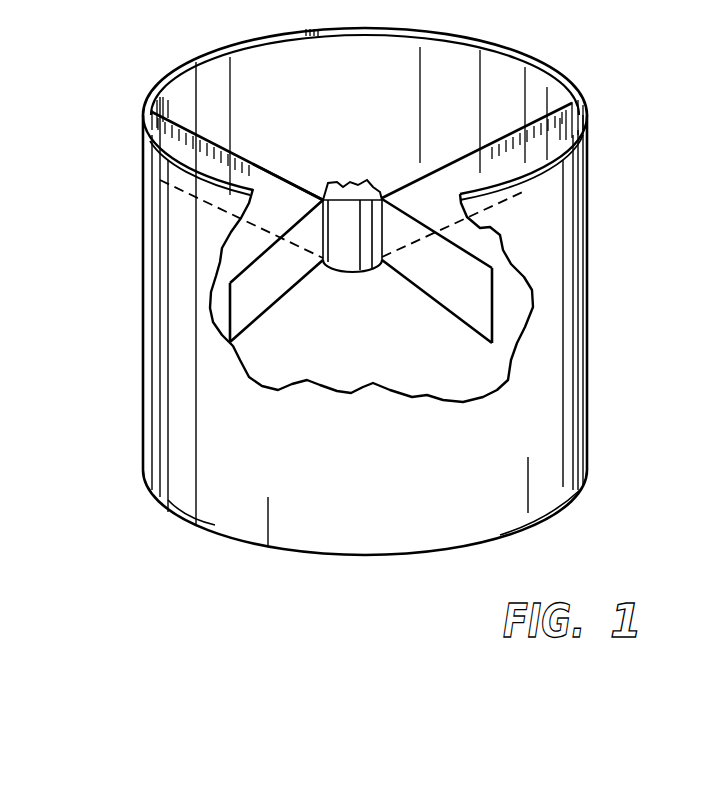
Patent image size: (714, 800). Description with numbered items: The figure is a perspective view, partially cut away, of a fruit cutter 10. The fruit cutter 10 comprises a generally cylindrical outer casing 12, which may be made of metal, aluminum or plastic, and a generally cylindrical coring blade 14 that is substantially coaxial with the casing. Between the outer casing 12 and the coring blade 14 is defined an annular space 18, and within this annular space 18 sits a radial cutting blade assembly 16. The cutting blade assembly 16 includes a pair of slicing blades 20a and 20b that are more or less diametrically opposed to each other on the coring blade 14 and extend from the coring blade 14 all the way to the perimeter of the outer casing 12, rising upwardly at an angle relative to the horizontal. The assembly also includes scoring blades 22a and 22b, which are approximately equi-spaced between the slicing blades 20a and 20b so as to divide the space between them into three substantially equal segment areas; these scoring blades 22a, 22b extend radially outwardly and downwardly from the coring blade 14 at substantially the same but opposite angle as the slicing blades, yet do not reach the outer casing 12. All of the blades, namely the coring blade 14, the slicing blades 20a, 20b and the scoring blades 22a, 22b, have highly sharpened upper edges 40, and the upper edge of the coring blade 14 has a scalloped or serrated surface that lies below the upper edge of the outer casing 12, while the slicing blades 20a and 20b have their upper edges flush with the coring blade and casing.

The fruit cutter 10 is at (117, 123).
The outer casing 12 is at (145, 280).
The coring blade 14 is at (357, 253).
The radial cutting blade assembly 16 is at (207, 138).
The annular space 18 is at (455, 67).
The slicing blade 20a is at (240, 163).
The slicing blade 20b is at (473, 167).
The scoring blade 22a is at (258, 307).
The scoring blade 22b is at (463, 303).
The upper edges 40 is at (293, 181).